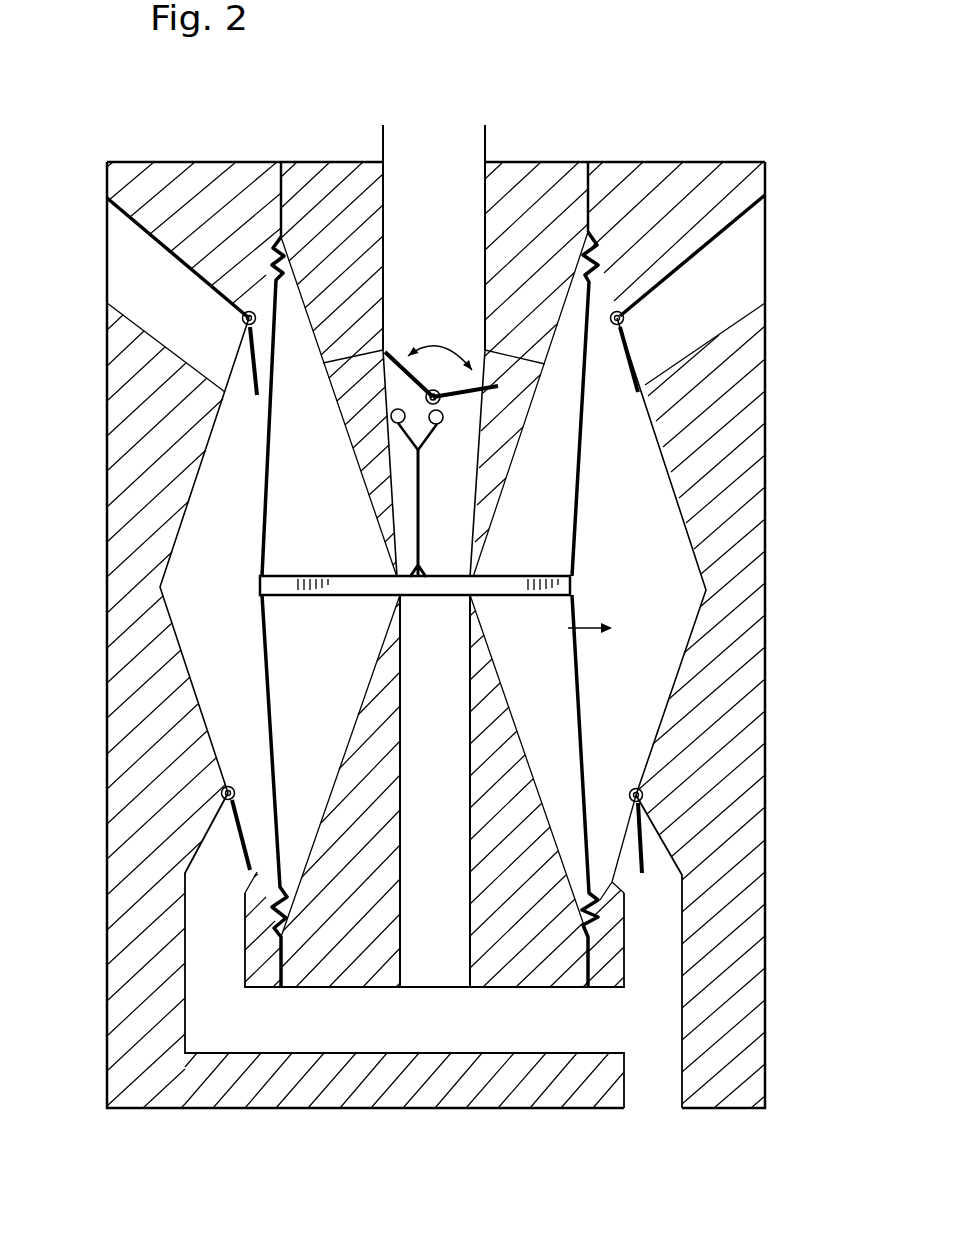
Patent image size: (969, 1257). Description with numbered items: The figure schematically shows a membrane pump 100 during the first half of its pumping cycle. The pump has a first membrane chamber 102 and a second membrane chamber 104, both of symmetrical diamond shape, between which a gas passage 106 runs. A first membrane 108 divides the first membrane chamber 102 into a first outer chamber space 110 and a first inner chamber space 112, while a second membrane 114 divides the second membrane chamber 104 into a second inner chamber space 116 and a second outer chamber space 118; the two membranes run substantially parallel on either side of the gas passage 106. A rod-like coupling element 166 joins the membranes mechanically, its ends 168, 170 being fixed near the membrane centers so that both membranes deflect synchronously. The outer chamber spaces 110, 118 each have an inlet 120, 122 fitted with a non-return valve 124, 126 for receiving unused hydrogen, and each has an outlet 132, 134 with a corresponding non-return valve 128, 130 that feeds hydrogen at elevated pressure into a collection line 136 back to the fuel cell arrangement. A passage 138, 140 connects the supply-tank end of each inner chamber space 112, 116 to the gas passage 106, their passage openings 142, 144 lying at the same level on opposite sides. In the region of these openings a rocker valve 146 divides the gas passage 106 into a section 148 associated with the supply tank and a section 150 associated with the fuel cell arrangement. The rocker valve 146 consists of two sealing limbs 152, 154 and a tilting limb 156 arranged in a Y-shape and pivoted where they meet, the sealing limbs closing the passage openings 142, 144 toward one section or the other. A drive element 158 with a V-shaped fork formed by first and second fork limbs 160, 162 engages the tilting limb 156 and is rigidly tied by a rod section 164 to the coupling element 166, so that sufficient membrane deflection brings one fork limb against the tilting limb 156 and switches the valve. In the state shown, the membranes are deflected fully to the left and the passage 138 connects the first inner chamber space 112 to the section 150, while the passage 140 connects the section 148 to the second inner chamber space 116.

The membrane pump 100 is at (700, 97).
The first membrane chamber 102 is at (200, 718).
The second membrane chamber 104 is at (667, 470).
The gas passage 106 is at (439, 145).
The first membrane 108 is at (263, 500).
The first outer chamber space 110 is at (185, 617).
The first inner chamber space 112 is at (340, 791).
The second membrane 114 is at (577, 518).
The second inner chamber space 116 is at (529, 791).
The second outer chamber space 118 is at (660, 720).
The inlet 120 is at (125, 255).
The inlet 122 is at (752, 240).
The non-return valve 124 is at (247, 372).
The non-return valve 126 is at (628, 343).
The non-return valve 128 is at (240, 830).
The non-return valve 130 is at (643, 847).
The outlet 132 is at (213, 888).
The outlet 134 is at (647, 895).
The collection line 136 is at (518, 1030).
The passage 138 is at (330, 387).
The passage 140 is at (535, 400).
The passage opening 142 is at (373, 367).
The passage opening 144 is at (495, 370).
The rocker valve 146 is at (455, 365).
The section 148 is at (457, 211).
The section 150 is at (457, 941).
The sealing limb 152 is at (385, 408).
The sealing limb 154 is at (465, 397).
The tilting limb 156 is at (437, 347).
The drive element 158 is at (445, 526).
The first fork limb 160 is at (395, 438).
The second fork limb 162 is at (437, 425).
The rod section 164 is at (417, 497).
The coupling element 166 is at (435, 583).
The end 168 is at (268, 588).
The end 170 is at (562, 588).